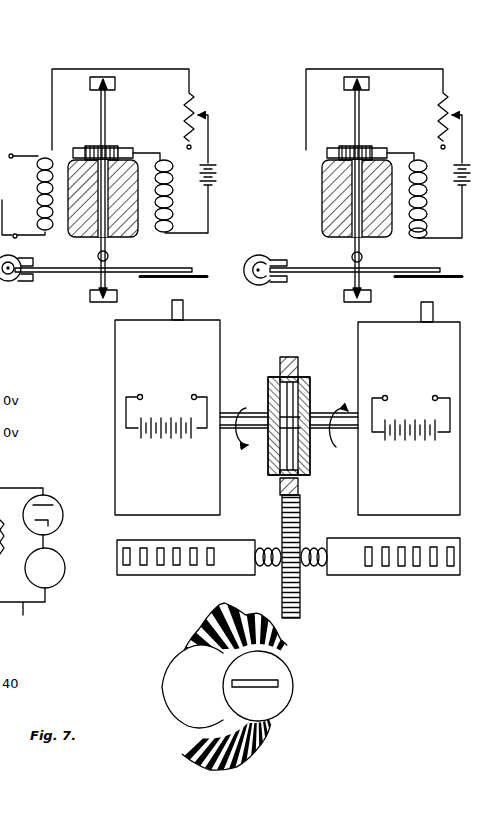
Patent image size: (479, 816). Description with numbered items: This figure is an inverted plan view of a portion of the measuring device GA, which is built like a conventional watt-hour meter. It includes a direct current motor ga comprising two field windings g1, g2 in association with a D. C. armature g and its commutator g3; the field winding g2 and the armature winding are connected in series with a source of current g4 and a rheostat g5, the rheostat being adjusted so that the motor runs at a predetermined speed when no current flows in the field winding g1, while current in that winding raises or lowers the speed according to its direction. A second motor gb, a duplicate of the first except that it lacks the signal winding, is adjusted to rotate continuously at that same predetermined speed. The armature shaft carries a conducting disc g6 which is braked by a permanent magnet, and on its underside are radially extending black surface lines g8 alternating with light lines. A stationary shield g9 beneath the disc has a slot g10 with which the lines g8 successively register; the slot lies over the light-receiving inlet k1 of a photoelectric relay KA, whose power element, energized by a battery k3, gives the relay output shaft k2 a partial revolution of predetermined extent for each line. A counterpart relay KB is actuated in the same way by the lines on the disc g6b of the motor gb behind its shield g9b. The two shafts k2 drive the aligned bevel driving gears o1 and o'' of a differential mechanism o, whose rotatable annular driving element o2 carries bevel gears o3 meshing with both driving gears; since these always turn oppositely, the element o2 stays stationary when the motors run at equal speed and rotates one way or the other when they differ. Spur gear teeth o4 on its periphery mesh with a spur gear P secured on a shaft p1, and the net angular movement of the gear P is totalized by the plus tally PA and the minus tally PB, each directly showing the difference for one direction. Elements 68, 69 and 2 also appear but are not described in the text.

The measuring device GA is at (311, 62).
The direct current motor ga is at (60, 166).
The D. C. armature g is at (77, 241).
The second motor gb is at (311, 210).
The field winding g1 is at (37, 184).
The field winding g2 is at (163, 217).
The commutator g3 is at (123, 148).
The source of current g4 is at (212, 172).
The rheostat g5 is at (198, 103).
The conducting disc g6 is at (133, 268).
The cam lobe g6b is at (180, 700).
The black surface lines g8 is at (272, 637).
The stationary shield g9 is at (192, 278).
The cam hub g9b is at (287, 712).
The slot g10 is at (272, 681).
The light-receiving inlet k1 is at (184, 312).
The relay output shaft k2 is at (233, 413).
The battery k3 is at (158, 413).
The photoelectric relay KA is at (182, 473).
The photoelectric relay KB is at (426, 473).
The differential mechanism o is at (294, 394).
The bevel driving gear o1 is at (270, 461).
The annular driving element o2 is at (272, 364).
The bevel gears o3 is at (303, 375).
The spur gear teeth o4 is at (288, 356).
The bevel driving gear o'' is at (322, 469).
The spur gear P is at (300, 602).
The shaft p1 is at (277, 568).
The tally PA is at (420, 578).
The tally PB is at (187, 578).
The tube 68 is at (31, 521).
The tube 69 is at (32, 581).
The terminal 2 is at (28, 617).